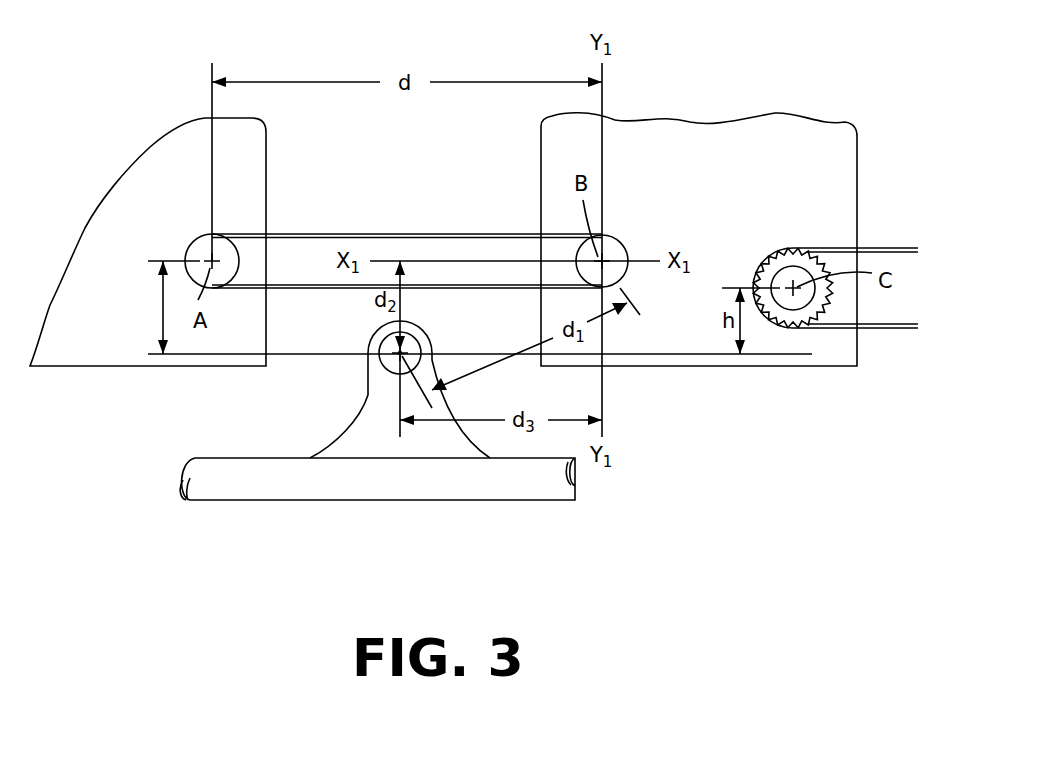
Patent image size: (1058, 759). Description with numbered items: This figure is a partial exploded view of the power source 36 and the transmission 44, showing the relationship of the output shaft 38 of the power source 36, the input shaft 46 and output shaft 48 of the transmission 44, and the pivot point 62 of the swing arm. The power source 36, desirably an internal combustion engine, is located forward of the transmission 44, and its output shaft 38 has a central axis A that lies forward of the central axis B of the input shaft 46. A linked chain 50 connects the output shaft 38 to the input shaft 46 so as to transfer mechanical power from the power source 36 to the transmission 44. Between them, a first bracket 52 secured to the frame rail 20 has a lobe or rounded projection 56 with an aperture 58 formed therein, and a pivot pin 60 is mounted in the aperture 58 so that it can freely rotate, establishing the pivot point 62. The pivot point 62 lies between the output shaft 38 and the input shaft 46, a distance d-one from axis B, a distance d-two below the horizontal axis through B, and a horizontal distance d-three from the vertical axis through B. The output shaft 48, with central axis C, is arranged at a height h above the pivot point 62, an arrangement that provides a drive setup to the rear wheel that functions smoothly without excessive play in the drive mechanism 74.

The frame rail 20 is at (520, 490).
The power source 36 is at (155, 170).
The output shaft 38 is at (193, 242).
The transmission 44 is at (857, 160).
The input shaft 46 is at (622, 242).
The output shaft 48 is at (800, 268).
The linked chain 50 is at (349, 233).
The first bracket 52 is at (450, 405).
The rounded projection 56 is at (368, 343).
The aperture 58 is at (421, 333).
The pivot pin 60 is at (423, 330).
The pivot point 62 is at (406, 351).
The drive mechanism 74 is at (895, 247).